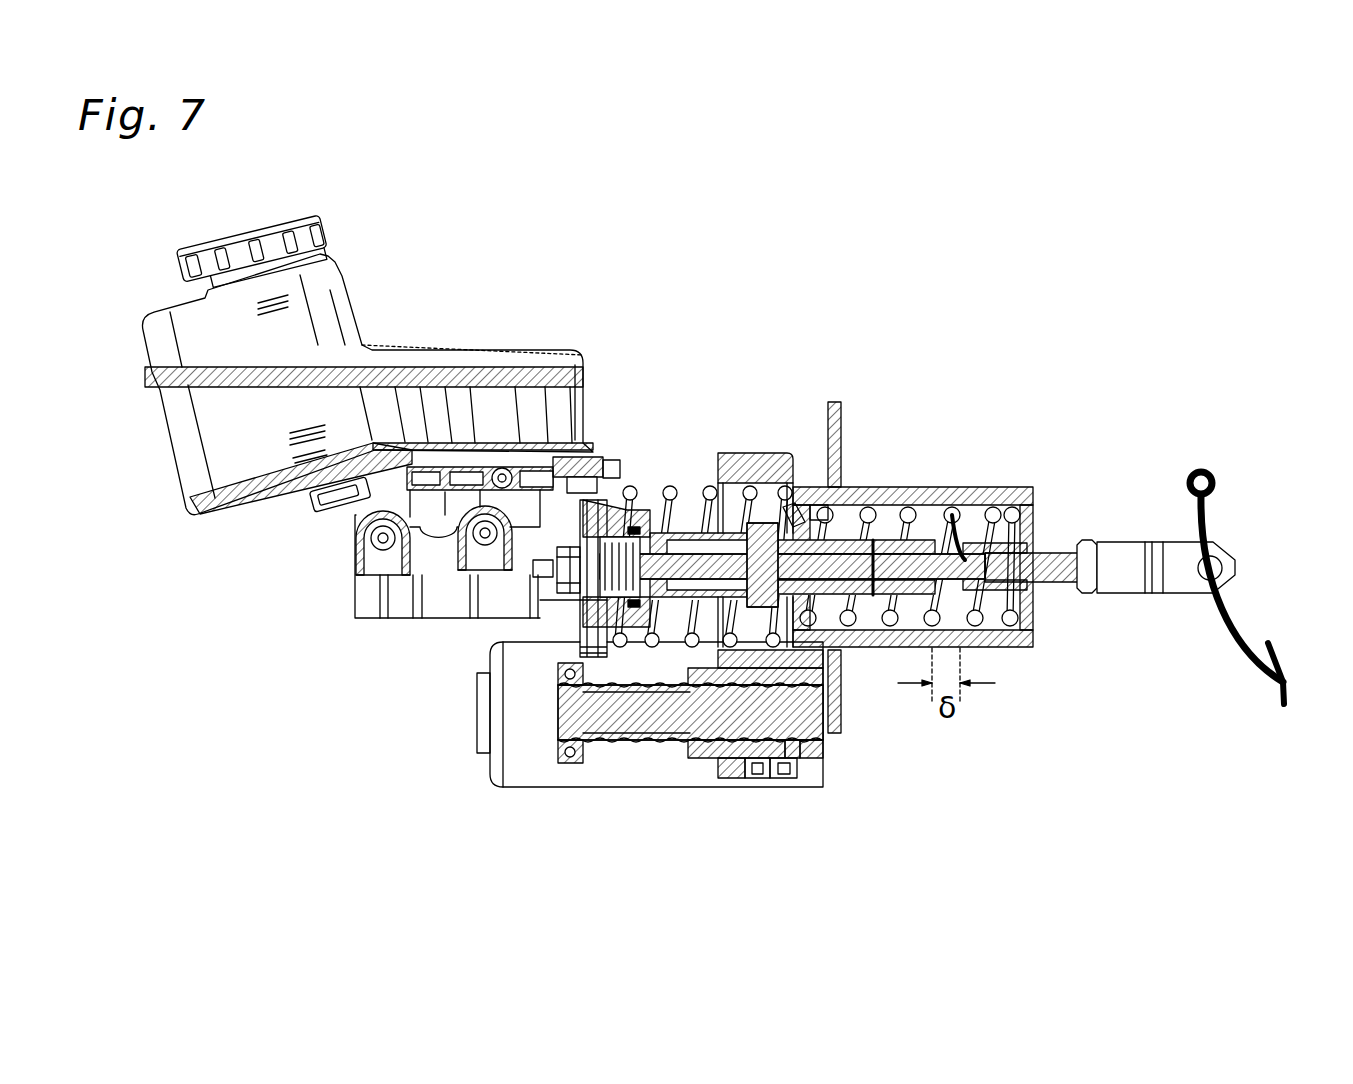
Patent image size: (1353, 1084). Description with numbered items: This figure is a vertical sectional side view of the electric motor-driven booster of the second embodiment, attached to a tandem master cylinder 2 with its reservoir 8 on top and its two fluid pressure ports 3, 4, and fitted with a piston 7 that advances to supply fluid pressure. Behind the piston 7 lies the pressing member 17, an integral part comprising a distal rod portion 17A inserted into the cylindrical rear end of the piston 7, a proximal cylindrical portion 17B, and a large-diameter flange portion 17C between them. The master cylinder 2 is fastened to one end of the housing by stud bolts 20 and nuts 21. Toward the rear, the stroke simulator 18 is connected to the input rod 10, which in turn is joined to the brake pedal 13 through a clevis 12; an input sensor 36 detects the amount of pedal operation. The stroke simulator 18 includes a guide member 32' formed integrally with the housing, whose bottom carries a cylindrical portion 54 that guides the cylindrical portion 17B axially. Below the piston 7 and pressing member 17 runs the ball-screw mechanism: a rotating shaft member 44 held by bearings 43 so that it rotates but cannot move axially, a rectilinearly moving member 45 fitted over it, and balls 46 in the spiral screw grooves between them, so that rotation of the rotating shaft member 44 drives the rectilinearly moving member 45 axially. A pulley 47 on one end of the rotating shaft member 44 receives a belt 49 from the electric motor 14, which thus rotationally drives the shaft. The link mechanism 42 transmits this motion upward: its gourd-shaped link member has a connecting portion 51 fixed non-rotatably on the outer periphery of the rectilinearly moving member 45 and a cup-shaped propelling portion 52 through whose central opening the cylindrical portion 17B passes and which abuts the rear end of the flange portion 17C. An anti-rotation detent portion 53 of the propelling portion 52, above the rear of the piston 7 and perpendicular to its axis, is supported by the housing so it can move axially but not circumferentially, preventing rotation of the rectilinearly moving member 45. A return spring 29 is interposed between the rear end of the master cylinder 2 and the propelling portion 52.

The master cylinder 2 is at (368, 595).
The fluid pressure port 3 is at (383, 532).
The fluid pressure port 4 is at (483, 528).
The piston 7 is at (670, 612).
The reservoir 8 is at (352, 278).
The input rod 10 is at (1075, 583).
The clevis 12 is at (1185, 580).
The brake pedal 13 is at (1240, 614).
The electric motor 14 is at (523, 765).
The pressing member 17 is at (745, 553).
The rod portion 17A is at (658, 487).
The cylindrical portion 17B is at (878, 555).
The flange portion 17C is at (762, 520).
The stroke simulator 18 is at (1037, 483).
The stud bolt 20 is at (538, 573).
The nut 21 is at (540, 587).
The return spring 29 is at (630, 494).
The guide member 32' is at (977, 473).
The input sensor 36 is at (1203, 468).
The link mechanism 42 is at (808, 448).
The bearing 43 is at (570, 763).
The rotating shaft member 44 is at (623, 728).
The rectilinearly moving member 45 is at (703, 762).
The ball 46 is at (780, 768).
The pulley 47 is at (825, 750).
The belt 49 is at (815, 765).
The connecting portion 51 is at (740, 773).
The propelling portion 52 is at (790, 488).
The detent portion 53 is at (767, 465).
The cylindrical portion 54 is at (848, 527).